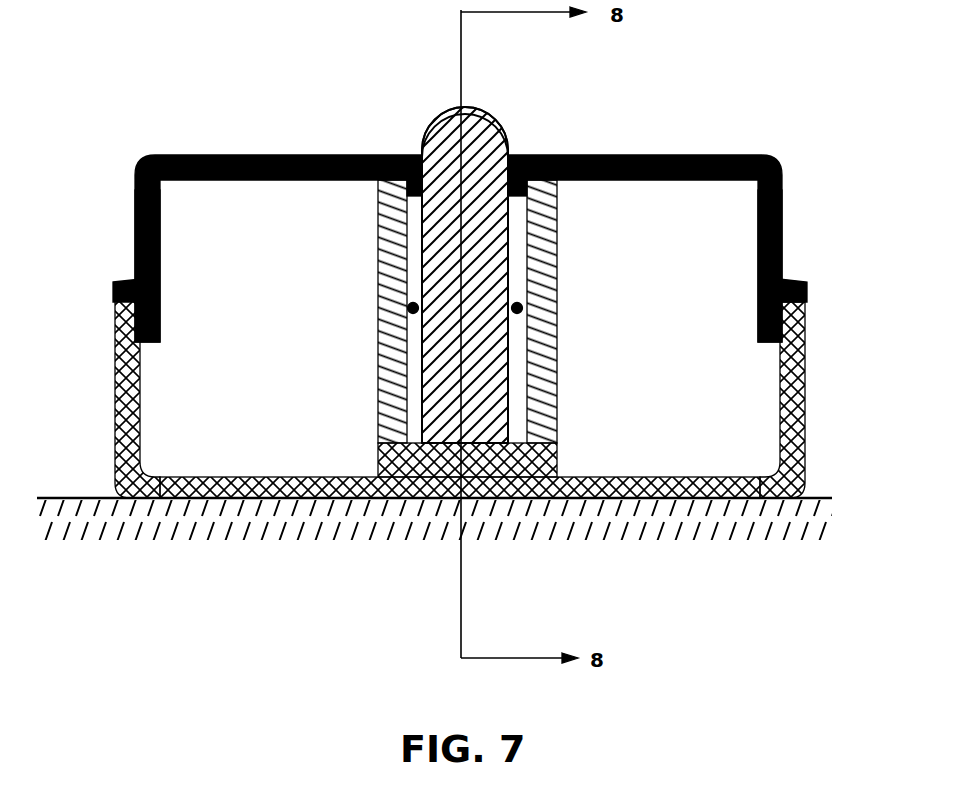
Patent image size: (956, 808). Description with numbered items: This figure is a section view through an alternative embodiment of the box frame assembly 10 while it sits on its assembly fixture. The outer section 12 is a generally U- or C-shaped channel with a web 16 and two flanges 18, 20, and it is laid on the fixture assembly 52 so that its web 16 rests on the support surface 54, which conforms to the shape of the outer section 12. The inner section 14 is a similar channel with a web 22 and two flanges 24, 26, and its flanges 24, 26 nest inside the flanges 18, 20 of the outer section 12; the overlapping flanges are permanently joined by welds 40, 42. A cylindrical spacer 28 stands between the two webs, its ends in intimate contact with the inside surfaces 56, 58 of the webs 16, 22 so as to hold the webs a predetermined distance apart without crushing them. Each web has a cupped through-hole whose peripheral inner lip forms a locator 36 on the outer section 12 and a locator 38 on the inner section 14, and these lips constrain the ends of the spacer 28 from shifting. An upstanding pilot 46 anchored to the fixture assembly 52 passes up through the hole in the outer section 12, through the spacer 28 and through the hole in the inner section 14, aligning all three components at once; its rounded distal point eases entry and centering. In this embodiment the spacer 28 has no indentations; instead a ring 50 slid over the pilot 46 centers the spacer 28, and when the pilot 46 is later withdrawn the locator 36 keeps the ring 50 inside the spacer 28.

The box frame assembly 10 is at (155, 103).
The outer section 12 is at (586, 500).
The inner section 14 is at (465, 195).
The web 16 is at (460, 441).
The flange 18 is at (145, 388).
The flange 20 is at (780, 408).
The web 22 is at (314, 157).
The flange 24 is at (160, 240).
The flange 26 is at (758, 240).
The cylindrical spacer 28 is at (558, 275).
The locator 36 is at (492, 133).
The locator 38 is at (433, 480).
The weld 40 is at (118, 284).
The weld 42 is at (796, 285).
The pilot 46 is at (501, 339).
The ring 50 is at (413, 303).
The fixture assembly 52 is at (461, 498).
The support surface 54 is at (85, 498).
The inside surface 56 is at (262, 480).
The inside surface 58 is at (319, 182).